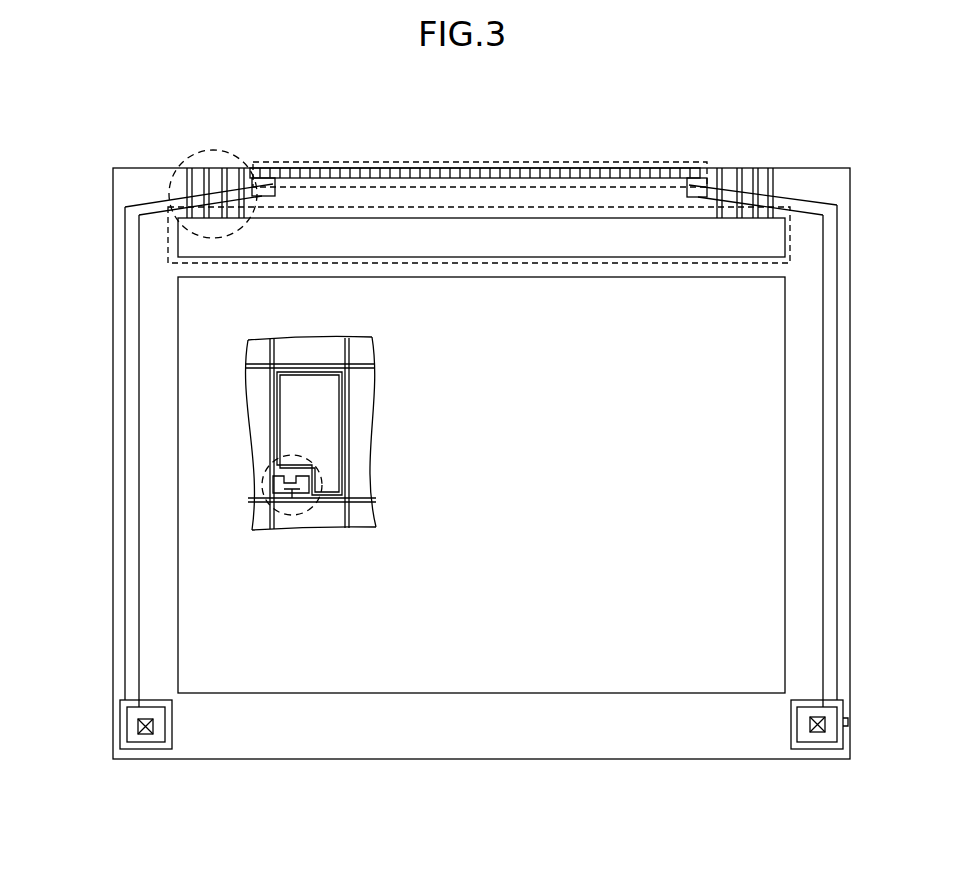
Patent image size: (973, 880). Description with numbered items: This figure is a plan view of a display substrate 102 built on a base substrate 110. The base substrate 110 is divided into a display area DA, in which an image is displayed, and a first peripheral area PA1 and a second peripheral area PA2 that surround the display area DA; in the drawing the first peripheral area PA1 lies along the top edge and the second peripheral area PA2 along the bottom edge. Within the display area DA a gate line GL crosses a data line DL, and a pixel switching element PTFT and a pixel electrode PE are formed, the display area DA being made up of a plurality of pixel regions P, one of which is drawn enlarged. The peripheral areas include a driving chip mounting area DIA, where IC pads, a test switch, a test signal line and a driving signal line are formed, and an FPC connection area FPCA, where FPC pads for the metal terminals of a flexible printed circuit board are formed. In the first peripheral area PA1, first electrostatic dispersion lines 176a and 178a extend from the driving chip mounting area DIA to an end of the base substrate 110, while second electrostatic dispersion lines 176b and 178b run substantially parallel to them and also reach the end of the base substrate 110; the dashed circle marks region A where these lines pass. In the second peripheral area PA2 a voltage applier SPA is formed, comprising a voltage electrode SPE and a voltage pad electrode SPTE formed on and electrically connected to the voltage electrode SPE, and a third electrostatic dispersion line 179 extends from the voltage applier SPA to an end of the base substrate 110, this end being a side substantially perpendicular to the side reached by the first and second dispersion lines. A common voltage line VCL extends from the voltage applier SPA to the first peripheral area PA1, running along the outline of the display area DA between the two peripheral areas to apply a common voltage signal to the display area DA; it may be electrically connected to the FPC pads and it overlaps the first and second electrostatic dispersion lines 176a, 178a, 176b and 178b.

The display substrate 102 is at (498, 92).
The base substrate 110 is at (813, 173).
The common voltage line VCL is at (130, 466).
The FPC connection area FPCA is at (548, 158).
The driving chip mounting area DIA is at (606, 203).
The region A is at (161, 186).
The second electrostatic dispersion line 178b is at (186, 183).
The second electrostatic dispersion line 176b is at (198, 178).
The first electrostatic dispersion line 176a is at (239, 180).
The first electrostatic dispersion line 178a is at (254, 188).
The display area DA is at (855, 263).
The first peripheral area PA1 is at (855, 168).
The second peripheral area PA2 is at (855, 759).
The pixel region P is at (315, 414).
The gate line GL is at (360, 499).
The data line DL is at (351, 395).
The pixel electrode PE is at (333, 431).
The pixel switching element PTFT is at (292, 516).
The third electrostatic dispersion line 179 is at (117, 756).
The voltage pad electrode SPTE is at (163, 746).
The voltage electrode SPE is at (142, 759).
The voltage applier SPA is at (120, 778).